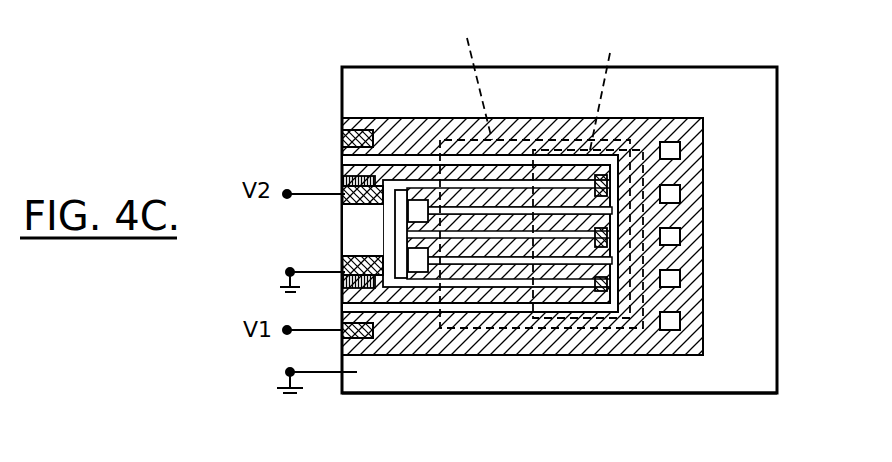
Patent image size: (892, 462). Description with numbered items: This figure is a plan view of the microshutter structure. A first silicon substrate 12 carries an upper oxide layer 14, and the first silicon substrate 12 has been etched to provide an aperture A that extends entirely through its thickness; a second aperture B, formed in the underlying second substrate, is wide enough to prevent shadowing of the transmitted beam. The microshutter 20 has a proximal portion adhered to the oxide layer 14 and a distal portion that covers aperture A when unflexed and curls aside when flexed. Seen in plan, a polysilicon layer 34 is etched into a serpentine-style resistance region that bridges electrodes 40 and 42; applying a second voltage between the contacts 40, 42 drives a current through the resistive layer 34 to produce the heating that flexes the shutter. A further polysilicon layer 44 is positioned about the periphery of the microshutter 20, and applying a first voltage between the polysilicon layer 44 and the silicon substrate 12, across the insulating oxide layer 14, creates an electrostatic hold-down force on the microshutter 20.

The first silicon substrate 12 is at (717, 397).
The upper oxide layer 14 is at (753, 293).
The microshutter 20 is at (554, 229).
The polysilicon layer 34 is at (503, 292).
The electrode 40 is at (345, 206).
The electrode 42 is at (366, 262).
The further polysilicon layer 44 is at (405, 338).